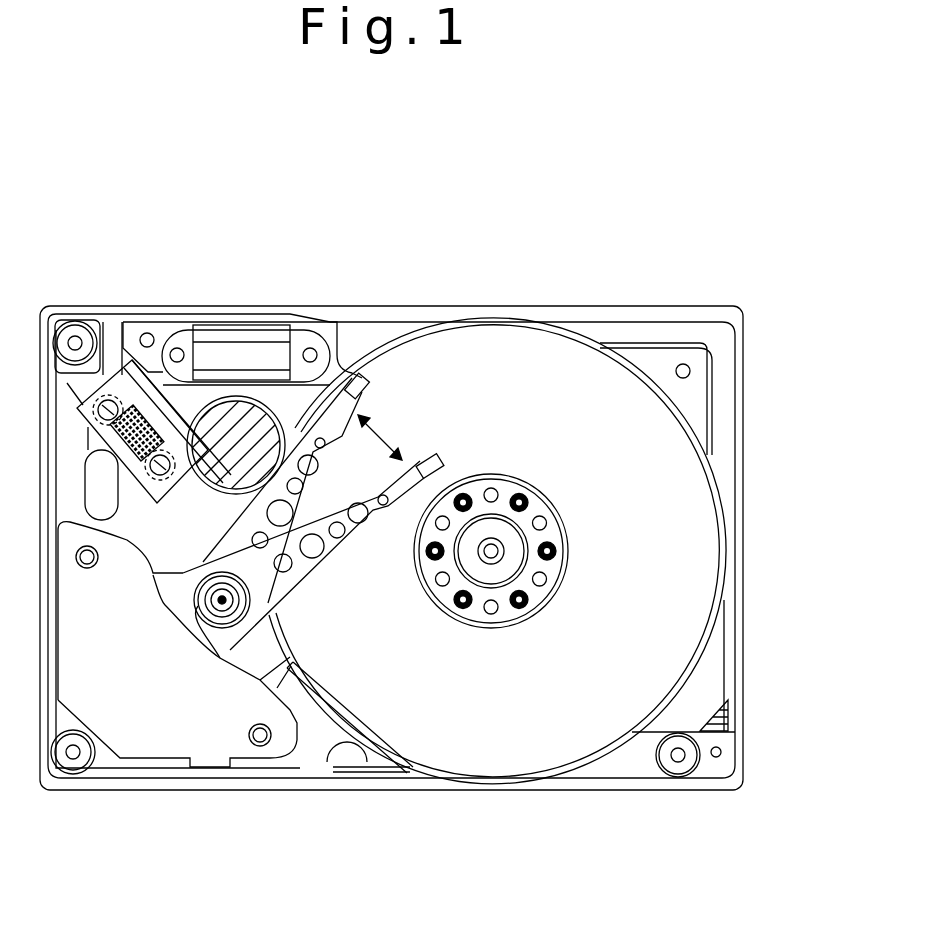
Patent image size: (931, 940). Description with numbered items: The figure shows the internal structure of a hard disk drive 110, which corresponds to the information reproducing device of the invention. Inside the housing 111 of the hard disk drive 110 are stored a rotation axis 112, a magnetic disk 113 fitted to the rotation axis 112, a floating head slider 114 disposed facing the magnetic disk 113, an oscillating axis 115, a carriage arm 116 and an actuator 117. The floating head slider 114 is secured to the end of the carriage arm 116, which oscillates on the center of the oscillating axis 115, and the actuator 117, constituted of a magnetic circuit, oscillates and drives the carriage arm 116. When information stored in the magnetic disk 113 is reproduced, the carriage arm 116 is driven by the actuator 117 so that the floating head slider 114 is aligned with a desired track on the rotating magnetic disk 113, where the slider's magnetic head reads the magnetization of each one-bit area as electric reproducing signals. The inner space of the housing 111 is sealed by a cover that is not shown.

The hard disk drive 110 is at (560, 200).
The housing 111 is at (603, 310).
The rotation axis 112 is at (491, 551).
The magnetic disk 113 is at (690, 505).
The floating head slider 114 is at (423, 467).
The oscillating axis 115 is at (222, 606).
The carriage arm 116 is at (297, 572).
The actuator 117 is at (138, 738).